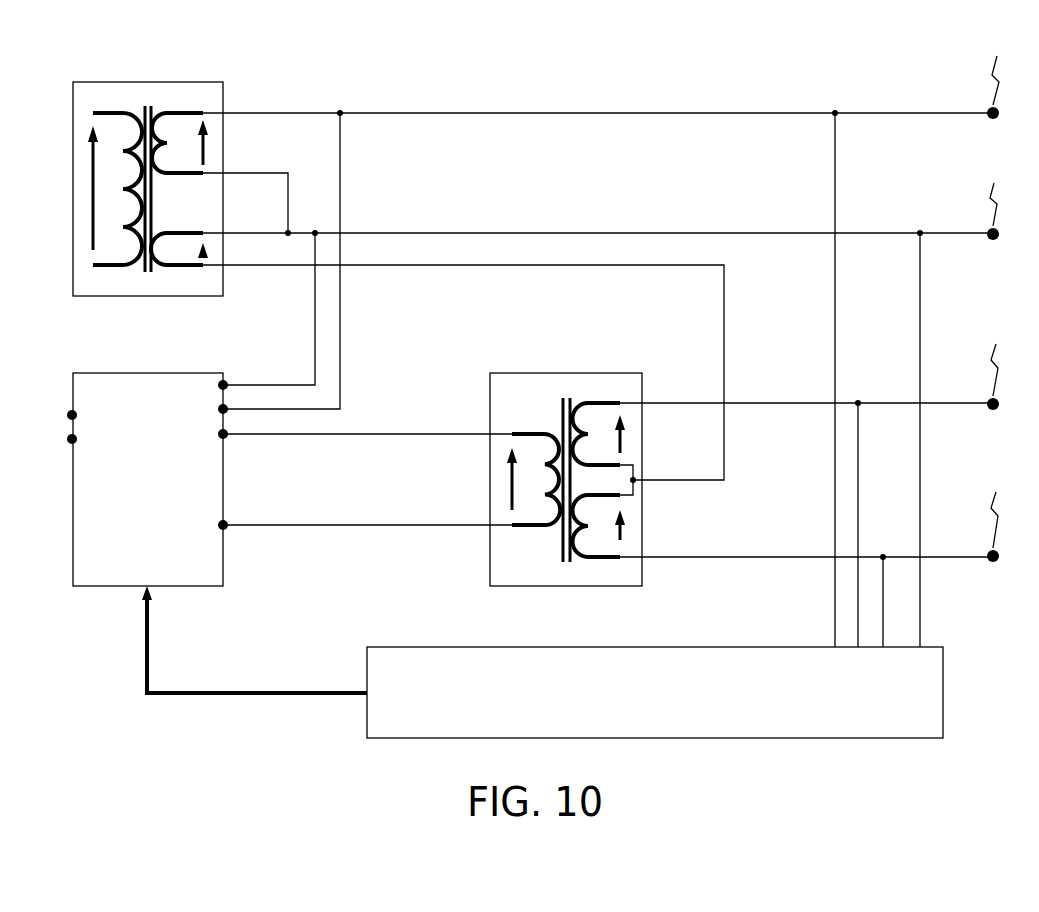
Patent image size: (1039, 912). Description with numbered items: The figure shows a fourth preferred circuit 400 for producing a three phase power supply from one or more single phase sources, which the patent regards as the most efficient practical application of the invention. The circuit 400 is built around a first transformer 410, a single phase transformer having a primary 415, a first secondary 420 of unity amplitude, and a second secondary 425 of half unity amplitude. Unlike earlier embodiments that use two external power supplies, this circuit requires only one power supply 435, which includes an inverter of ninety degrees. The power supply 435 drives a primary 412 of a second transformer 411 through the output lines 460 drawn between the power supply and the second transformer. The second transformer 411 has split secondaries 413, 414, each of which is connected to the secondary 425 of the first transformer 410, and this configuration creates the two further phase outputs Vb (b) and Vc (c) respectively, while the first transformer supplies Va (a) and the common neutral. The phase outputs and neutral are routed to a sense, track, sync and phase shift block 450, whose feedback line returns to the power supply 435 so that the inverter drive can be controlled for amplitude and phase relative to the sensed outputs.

The fourth preferred circuit 400 is at (572, 78).
The first transformer 410 is at (147, 82).
The primary 415 is at (124, 172).
The first secondary 420 is at (170, 128).
The second secondary 425 is at (170, 250).
The second transformer 411 is at (566, 373).
The primary of second transformer 412 is at (545, 450).
The split secondary 413 is at (600, 420).
The split secondary 414 is at (590, 535).
The power supply 435 is at (62, 425).
The power driver output lines 460 is at (228, 520).
The sense/track/sync/phase shift circuit 450 is at (758, 647).